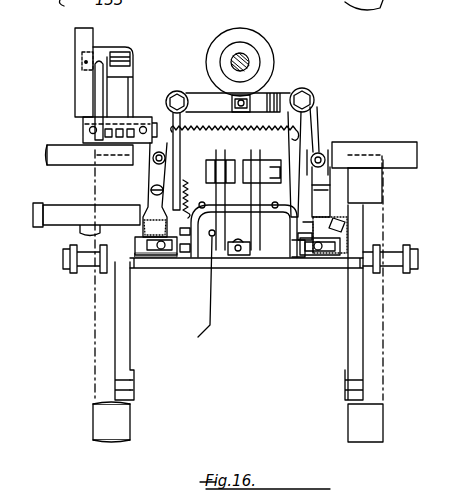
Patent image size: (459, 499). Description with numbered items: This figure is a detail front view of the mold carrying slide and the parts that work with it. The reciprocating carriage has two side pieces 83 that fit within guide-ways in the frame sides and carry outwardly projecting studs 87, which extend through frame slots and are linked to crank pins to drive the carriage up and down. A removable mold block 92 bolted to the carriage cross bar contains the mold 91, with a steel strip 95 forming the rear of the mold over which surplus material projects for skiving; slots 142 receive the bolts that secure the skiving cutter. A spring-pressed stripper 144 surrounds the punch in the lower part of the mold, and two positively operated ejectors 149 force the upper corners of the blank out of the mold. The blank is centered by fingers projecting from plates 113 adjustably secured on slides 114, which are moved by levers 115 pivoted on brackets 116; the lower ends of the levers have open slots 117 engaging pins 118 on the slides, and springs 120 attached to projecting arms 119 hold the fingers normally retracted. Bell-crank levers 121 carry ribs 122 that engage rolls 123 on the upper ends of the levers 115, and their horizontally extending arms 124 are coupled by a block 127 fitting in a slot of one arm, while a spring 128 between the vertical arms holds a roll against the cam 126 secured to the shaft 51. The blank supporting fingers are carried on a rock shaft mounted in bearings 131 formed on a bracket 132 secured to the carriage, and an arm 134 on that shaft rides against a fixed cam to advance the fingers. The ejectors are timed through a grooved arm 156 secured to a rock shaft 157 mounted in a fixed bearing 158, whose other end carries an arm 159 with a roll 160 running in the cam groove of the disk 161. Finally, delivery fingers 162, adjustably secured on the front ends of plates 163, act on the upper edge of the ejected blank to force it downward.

The shaft 51 is at (241, 55).
The side pieces 83 is at (128, 356).
The studs 87 is at (393, 260).
The mold 91 is at (206, 237).
The mold block 92 is at (307, 255).
The steel strip 95 is at (203, 253).
The plates 113 is at (337, 250).
The slides 114 is at (333, 240).
The levers 115 is at (337, 168).
The brackets 116 is at (380, 167).
The slots 117 is at (337, 220).
The pins 118 is at (340, 228).
The projecting arms 119 is at (235, 126).
The springs 120 is at (283, 165).
The bell-crank levers 121 is at (308, 117).
The ribs 122 is at (315, 147).
The rolls 123 is at (323, 155).
The horizontally extending arms 124 is at (272, 95).
The cam 126 is at (264, 52).
The block 127 is at (228, 95).
The spring 128 is at (236, 133).
The bearings 131 is at (38, 205).
The bracket 132 is at (67, 212).
The arm 134 is at (40, 18).
The slots 142 is at (297, 255).
The spring-pressed stripper 144 is at (232, 258).
The ejectors 149 is at (211, 290).
The grooved arm 156 is at (143, 167).
The rock shaft 157 is at (82, 133).
The fixed bearing 158 is at (125, 118).
The arm 159 is at (100, 95).
The roll 160 is at (95, 43).
The disk 161 is at (85, 35).
The delivery fingers 162 is at (258, 177).
The plates 163 is at (226, 178).